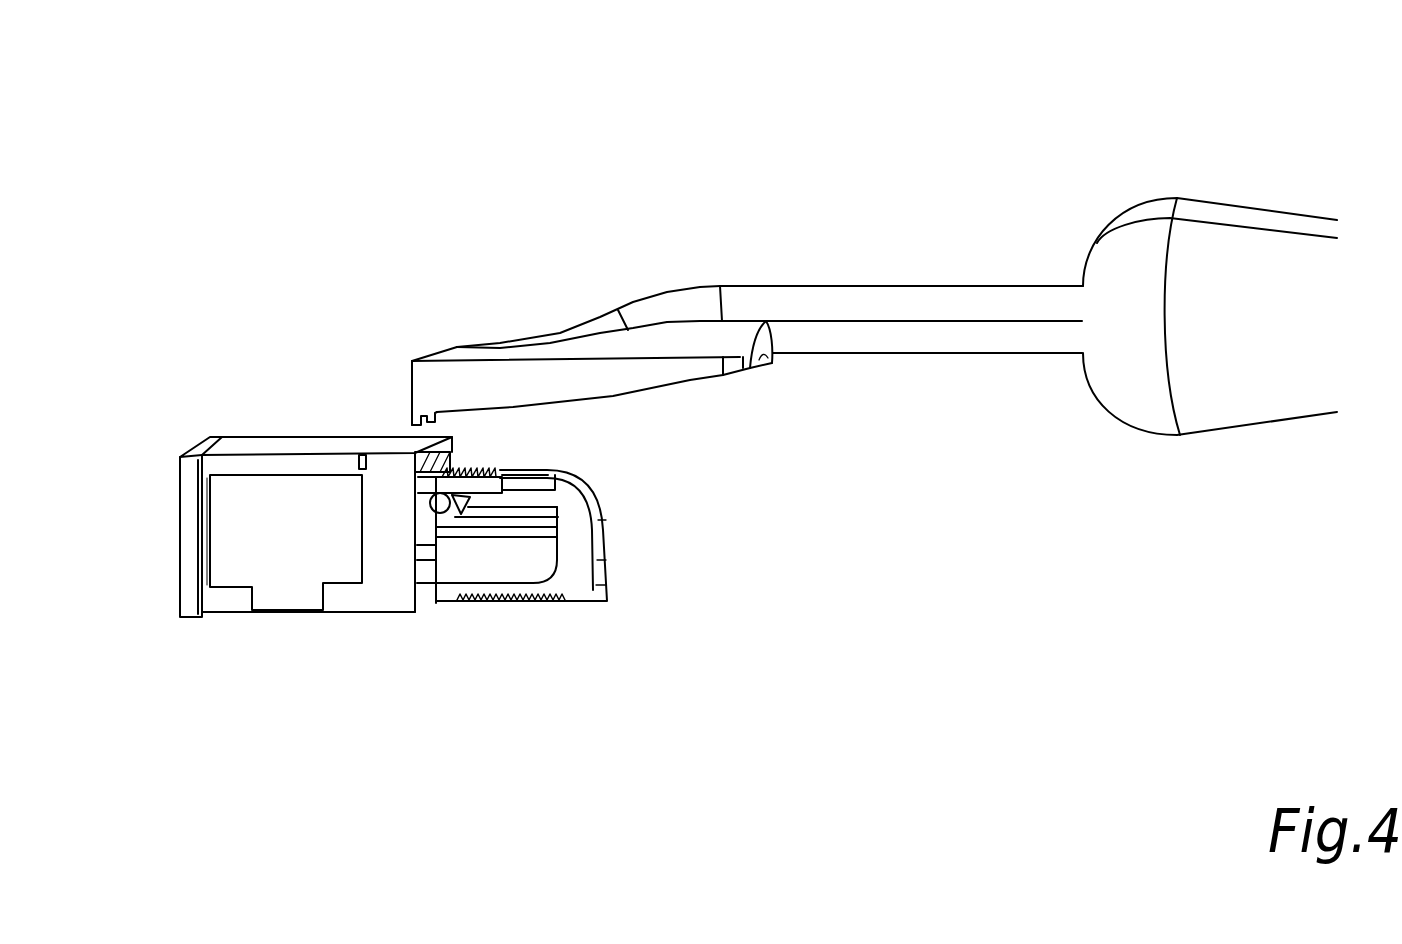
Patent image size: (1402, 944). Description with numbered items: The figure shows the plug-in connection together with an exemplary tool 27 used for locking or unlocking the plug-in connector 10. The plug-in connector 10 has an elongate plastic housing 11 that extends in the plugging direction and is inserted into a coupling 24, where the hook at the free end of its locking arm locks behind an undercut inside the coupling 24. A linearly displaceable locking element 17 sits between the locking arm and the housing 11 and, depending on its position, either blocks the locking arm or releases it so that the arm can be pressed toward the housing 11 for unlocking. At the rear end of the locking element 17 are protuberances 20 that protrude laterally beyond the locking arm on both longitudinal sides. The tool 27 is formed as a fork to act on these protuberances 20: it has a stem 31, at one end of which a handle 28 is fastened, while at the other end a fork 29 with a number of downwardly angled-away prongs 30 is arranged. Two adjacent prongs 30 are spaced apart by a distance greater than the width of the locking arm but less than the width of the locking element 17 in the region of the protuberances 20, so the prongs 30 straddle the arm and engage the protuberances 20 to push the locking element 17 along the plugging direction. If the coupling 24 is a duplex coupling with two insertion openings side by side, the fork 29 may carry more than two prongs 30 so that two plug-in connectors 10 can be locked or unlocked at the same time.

The plug-in connector 10 is at (604, 622).
The housing 11 is at (517, 578).
The locking element 17 is at (410, 514).
The protuberances 20 is at (418, 535).
The coupling 24 is at (278, 497).
The tool 27 is at (943, 212).
The handle 28 is at (1242, 257).
The fork 29 is at (452, 385).
The prongs 30 is at (407, 402).
The stem 31 is at (815, 297).